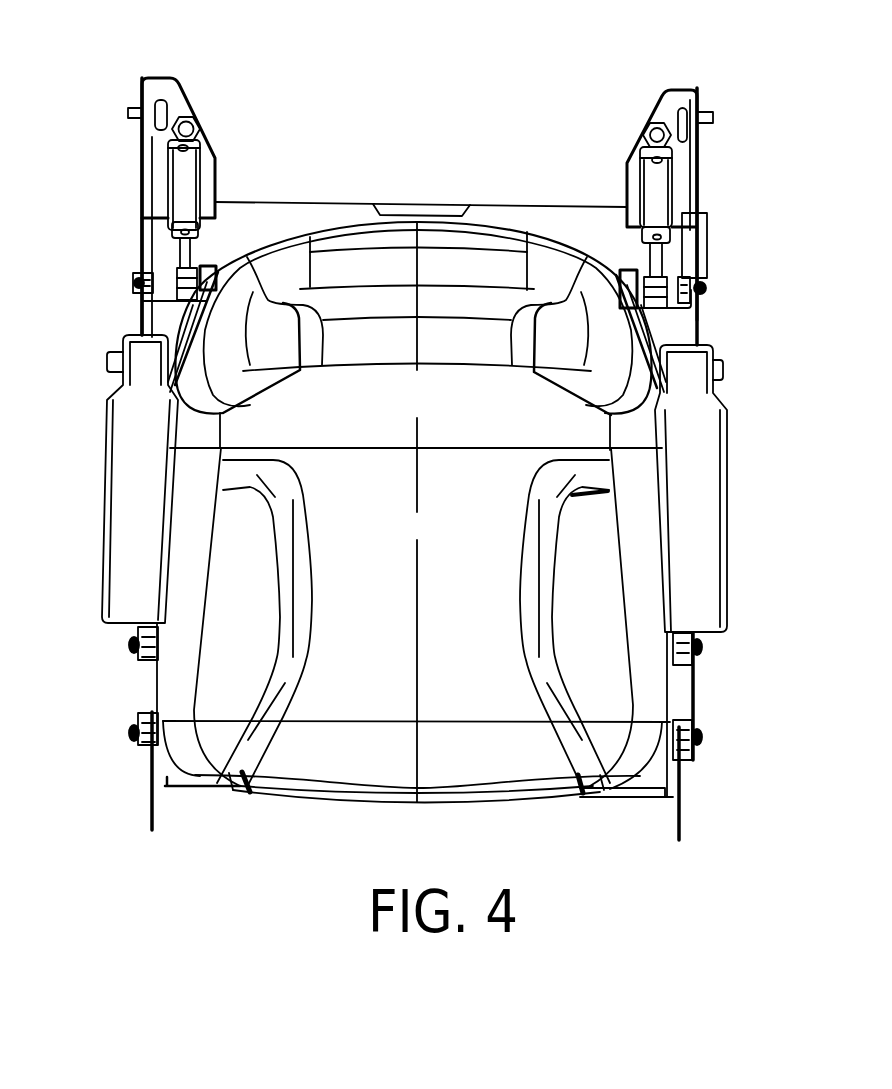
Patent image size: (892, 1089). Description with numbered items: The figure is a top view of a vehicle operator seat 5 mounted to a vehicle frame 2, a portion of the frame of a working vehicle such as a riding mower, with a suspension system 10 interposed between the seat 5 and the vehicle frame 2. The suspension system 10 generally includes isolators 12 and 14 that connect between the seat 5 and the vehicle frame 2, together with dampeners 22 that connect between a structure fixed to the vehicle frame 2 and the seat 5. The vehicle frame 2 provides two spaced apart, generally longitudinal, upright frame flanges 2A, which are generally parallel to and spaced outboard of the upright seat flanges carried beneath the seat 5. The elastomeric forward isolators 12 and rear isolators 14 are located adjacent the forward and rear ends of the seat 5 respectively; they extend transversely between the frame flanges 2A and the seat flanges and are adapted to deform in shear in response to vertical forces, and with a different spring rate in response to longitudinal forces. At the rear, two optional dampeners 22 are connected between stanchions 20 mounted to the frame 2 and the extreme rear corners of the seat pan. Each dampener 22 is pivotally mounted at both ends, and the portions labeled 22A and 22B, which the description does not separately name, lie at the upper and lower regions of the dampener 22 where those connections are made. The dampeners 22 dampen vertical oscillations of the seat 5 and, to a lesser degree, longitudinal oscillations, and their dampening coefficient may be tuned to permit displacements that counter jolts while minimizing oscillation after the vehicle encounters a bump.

The suspension system 10 is at (122, 306).
The vehicle frame 2 is at (261, 218).
The frame flanges 2A is at (703, 322).
The operator seat 5 is at (487, 541).
The forward isolators 12 is at (673, 323).
The rear isolators 14 is at (686, 698).
The stanchions 20 is at (675, 90).
The dampeners 22 is at (660, 198).
The actuator upper end 22A is at (652, 120).
The actuator lower end 22B is at (622, 232).